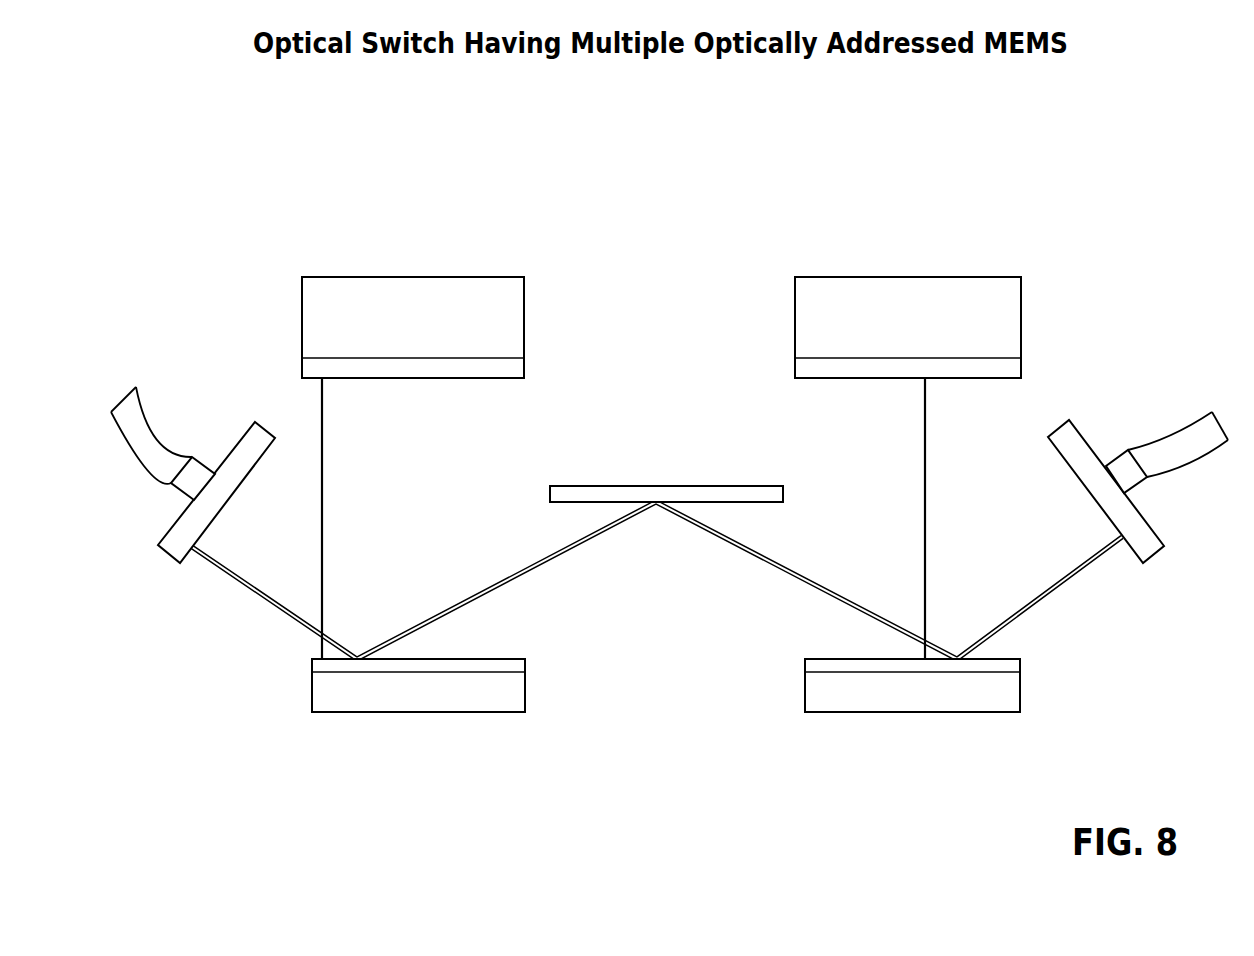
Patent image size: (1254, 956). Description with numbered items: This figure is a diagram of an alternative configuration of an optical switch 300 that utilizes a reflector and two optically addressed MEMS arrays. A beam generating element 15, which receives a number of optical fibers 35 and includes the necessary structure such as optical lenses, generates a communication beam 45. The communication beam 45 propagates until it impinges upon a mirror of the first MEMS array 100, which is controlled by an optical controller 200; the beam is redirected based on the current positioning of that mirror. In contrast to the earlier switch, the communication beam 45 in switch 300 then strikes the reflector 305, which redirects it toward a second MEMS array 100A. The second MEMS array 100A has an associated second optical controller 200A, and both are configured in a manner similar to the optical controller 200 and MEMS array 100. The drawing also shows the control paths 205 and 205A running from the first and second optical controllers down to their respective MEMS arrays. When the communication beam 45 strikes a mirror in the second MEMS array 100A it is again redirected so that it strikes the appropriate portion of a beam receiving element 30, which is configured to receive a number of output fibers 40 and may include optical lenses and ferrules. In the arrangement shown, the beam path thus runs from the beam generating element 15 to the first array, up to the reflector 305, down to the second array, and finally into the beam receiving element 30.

The optical switch 300 is at (178, 285).
The optical controller 200 is at (524, 306).
The second optical controller 200A is at (1021, 306).
The control light beam from first optical controller 205 is at (322, 503).
The control light beam from second optical controller 205A is at (923, 466).
The reflector 305 is at (568, 486).
The MEMS array 100 is at (525, 695).
The second MEMS array 100A is at (1020, 690).
The beam generating element 15 is at (173, 558).
The beam receiving element 30 is at (1157, 555).
The optical fibers 35 is at (134, 422).
The output fibers 40 is at (1180, 438).
The communication beam 45 is at (253, 593).